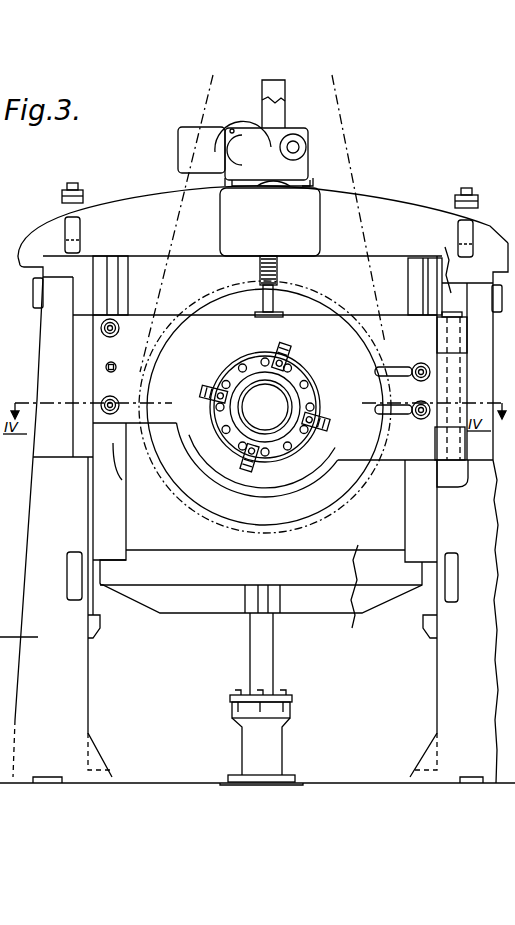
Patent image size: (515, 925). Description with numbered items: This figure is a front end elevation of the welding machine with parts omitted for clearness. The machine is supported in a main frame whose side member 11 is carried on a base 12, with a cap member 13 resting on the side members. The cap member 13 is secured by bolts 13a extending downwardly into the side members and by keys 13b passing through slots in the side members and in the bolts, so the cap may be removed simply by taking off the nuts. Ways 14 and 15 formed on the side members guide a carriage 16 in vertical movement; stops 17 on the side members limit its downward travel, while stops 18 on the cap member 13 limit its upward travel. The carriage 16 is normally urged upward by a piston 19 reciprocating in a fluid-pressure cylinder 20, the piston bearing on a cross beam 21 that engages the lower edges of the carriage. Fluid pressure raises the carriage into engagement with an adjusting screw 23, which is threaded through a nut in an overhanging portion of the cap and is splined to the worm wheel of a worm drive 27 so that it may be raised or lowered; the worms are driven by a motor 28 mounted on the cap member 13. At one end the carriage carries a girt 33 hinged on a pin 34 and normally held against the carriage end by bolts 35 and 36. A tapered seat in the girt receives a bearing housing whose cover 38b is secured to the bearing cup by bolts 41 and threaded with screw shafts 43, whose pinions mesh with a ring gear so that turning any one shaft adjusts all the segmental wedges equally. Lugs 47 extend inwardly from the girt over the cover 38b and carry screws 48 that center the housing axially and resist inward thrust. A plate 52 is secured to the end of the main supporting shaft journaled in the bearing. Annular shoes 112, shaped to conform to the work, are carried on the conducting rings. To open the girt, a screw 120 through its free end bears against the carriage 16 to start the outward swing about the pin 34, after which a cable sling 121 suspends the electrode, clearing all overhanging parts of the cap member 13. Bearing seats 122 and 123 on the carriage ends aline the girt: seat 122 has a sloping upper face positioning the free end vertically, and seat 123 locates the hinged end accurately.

The side member 11 is at (450, 663).
The base 12 is at (145, 792).
The cap member 13 is at (133, 205).
The bolts 13a is at (78, 182).
The keys 13b is at (33, 290).
The way 14 is at (85, 290).
The way 15 is at (114, 530).
The carriage 16 is at (88, 448).
The stops 17 is at (96, 622).
The stops 18 is at (119, 270).
The piston 19 is at (274, 652).
The fluid-pressure cylinder 20 is at (252, 745).
The cross beam 21 is at (182, 605).
The adjusting screw 23 is at (278, 270).
The worm drive 27 is at (279, 133).
The motor 28 is at (246, 125).
The girt 33 is at (393, 458).
The hinge pin 34 is at (437, 440).
The bolt 35 is at (402, 391).
The bolt 36 is at (100, 328).
The cover 38b is at (250, 353).
The bolts 41 is at (236, 447).
The screw shafts 43 is at (302, 383).
The lugs 47 is at (213, 383).
The screws 48 is at (318, 415).
The plate 52 is at (270, 418).
The annular shoes 112 is at (193, 505).
The screw 120 is at (118, 361).
The cable sling 121 is at (347, 97).
The bearing seat 122 is at (122, 482).
The bearing seat 123 is at (453, 478).